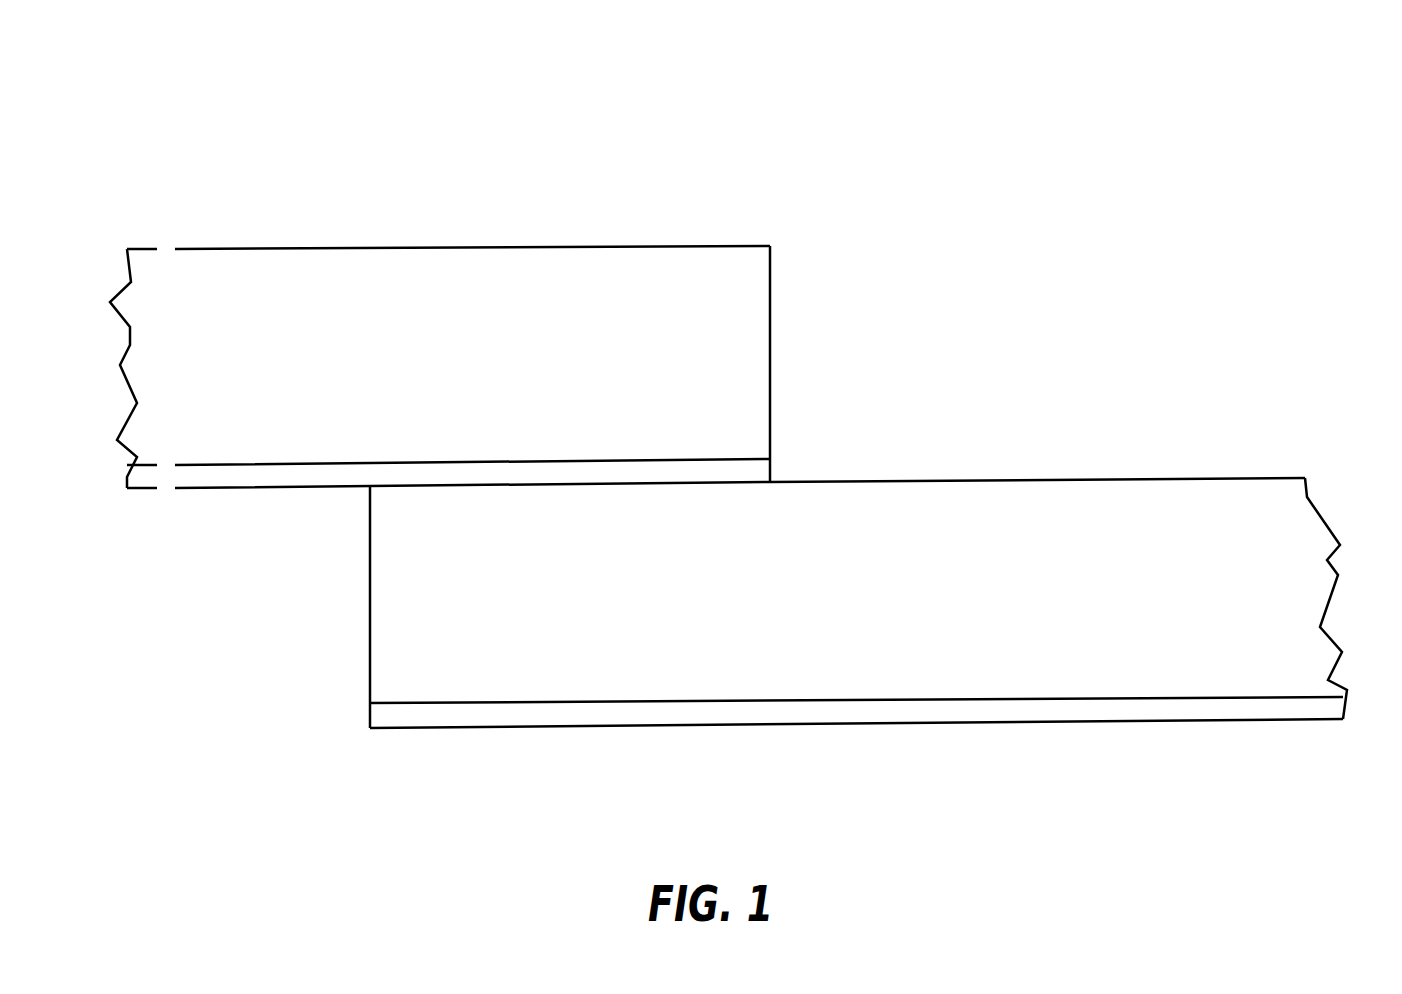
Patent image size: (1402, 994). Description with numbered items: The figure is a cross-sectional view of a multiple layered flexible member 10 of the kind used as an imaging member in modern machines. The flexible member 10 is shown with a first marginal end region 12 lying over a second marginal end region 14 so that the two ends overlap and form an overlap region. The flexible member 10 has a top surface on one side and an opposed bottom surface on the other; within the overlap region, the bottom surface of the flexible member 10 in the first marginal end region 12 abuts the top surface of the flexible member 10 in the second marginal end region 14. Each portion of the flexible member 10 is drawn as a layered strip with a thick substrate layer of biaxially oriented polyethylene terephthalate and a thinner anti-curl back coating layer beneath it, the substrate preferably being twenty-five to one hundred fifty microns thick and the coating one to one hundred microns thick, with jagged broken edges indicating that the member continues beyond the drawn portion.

The flexible member 10 is at (820, 88).
The first marginal end region 12 is at (518, 184).
The second marginal end region 14 is at (575, 760).